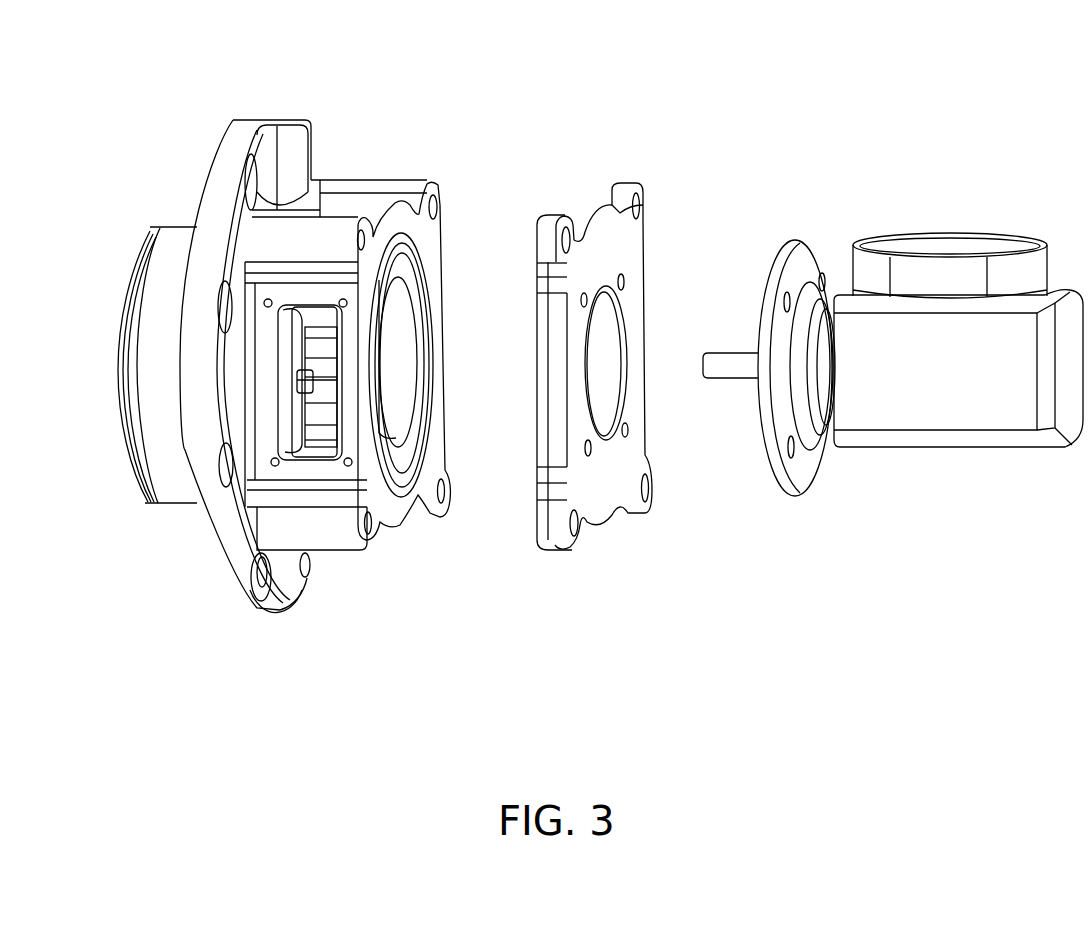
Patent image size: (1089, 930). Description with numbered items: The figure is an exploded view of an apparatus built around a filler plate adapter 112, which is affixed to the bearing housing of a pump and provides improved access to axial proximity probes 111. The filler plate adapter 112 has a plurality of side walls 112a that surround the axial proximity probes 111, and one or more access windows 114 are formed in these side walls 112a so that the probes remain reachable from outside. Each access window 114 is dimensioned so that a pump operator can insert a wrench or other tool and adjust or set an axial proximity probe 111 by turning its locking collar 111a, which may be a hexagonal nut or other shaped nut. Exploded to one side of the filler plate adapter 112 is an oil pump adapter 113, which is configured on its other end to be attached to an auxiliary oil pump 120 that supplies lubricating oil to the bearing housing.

The axial proximity probe 111 is at (330, 390).
The locking collar 111a is at (302, 372).
The filler plate adapter 112 is at (233, 118).
The side wall 112a is at (367, 182).
The oil pump adapter 113 is at (590, 202).
The access window 114 is at (320, 432).
The auxiliary oil pump 120 is at (787, 243).